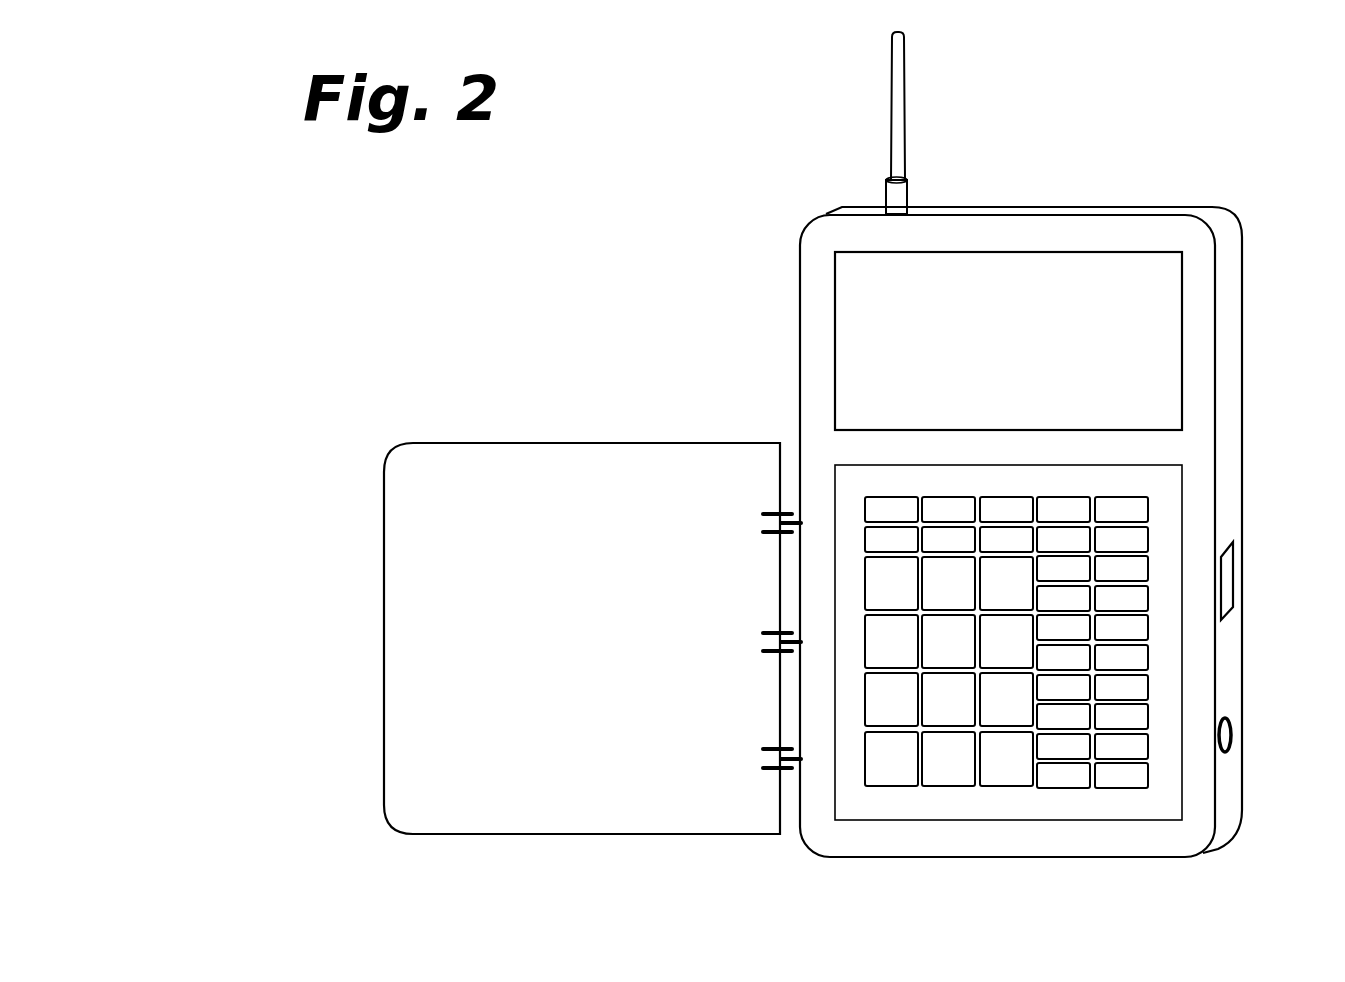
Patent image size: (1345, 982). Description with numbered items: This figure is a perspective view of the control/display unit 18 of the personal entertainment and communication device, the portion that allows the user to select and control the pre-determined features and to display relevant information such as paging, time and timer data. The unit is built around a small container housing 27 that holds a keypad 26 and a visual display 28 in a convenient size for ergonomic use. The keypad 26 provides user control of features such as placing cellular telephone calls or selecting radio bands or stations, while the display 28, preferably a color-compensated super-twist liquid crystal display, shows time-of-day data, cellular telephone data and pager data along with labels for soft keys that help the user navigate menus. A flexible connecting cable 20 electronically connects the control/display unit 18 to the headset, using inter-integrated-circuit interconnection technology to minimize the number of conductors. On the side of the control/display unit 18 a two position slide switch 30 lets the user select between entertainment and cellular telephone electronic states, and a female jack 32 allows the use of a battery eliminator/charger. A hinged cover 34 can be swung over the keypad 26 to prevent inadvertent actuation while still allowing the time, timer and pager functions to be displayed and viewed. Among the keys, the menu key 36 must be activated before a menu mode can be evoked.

The control/display unit 18 is at (633, 302).
The flexible connecting cable 20 is at (898, 120).
The keypad 26 is at (1157, 494).
The container housing 27 is at (1222, 221).
The visual display 28 is at (975, 277).
The two position slide switch 30 is at (1223, 580).
The female jack 32 is at (1233, 733).
The hinged cover 34 is at (597, 507).
The menu key 36 is at (1150, 779).